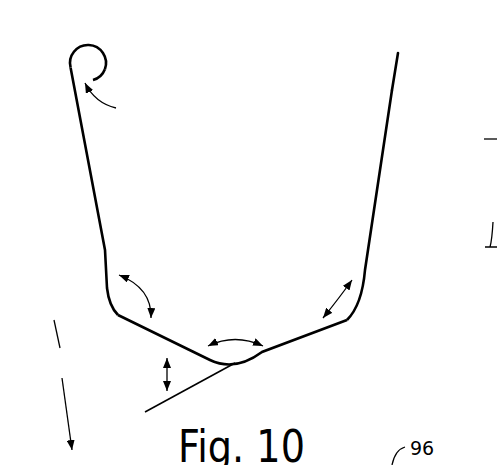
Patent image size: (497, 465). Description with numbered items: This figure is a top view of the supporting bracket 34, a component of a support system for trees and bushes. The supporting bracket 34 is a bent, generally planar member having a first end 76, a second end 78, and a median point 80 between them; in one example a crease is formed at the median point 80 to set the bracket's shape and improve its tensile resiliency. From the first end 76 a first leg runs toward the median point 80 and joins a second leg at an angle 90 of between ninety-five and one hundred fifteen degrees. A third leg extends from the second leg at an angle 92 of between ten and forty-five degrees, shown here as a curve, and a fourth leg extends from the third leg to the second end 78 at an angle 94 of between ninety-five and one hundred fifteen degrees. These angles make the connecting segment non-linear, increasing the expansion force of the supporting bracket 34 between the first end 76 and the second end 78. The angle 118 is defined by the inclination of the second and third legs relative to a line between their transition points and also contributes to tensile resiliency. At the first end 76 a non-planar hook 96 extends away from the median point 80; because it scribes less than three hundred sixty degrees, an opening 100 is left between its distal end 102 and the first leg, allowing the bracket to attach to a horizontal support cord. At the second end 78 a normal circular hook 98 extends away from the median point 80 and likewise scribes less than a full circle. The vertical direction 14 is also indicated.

The vertical direction 14 is at (62, 385).
The supporting bracket 34 is at (230, 191).
The first end 76 is at (73, 65).
The second end 78 is at (393, 80).
The median point 80 is at (238, 366).
The angle 90 is at (148, 300).
The angle 92 is at (235, 340).
The angle 94 is at (327, 310).
The non-planar hook 96 is at (104, 47).
The normal circular hook 98 is at (398, 53).
The opening 100 is at (119, 100).
The distal end 102 is at (96, 79).
The angle 118 is at (164, 371).